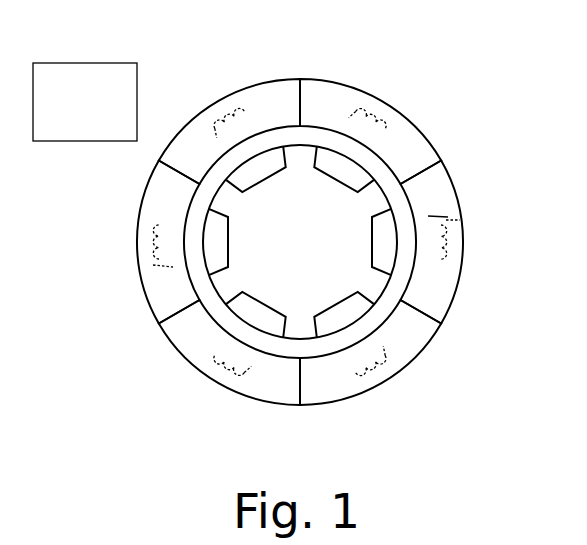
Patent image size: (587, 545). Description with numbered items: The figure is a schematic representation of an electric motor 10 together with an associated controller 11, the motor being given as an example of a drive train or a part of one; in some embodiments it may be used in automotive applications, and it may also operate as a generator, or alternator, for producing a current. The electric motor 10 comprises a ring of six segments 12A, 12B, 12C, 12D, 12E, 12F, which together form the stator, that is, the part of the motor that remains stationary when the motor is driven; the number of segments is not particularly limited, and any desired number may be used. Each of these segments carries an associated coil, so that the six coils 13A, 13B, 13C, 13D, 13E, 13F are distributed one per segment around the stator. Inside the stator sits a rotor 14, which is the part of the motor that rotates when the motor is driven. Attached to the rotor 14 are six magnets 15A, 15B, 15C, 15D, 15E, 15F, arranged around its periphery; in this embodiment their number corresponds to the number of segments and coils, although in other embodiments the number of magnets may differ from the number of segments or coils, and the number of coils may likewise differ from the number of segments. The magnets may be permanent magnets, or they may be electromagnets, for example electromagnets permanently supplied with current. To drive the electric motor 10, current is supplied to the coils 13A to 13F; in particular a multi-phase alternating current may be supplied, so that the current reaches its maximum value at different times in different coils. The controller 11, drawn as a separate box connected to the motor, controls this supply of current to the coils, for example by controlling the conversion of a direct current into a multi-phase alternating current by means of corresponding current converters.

The electric motor 10 is at (509, 233).
The controller 11 is at (67, 141).
The segment 12A is at (407, 118).
The segment 12B is at (449, 309).
The segment 12C is at (416, 357).
The segment 12D is at (189, 361).
The segment 12E is at (145, 293).
The segment 12F is at (244, 89).
The coil 13A is at (366, 112).
The coil 13B is at (448, 217).
The coil 13C is at (375, 370).
The coil 13D is at (233, 370).
The coil 13E is at (153, 253).
The coil 13F is at (218, 117).
The rotor 14 is at (387, 197).
The magnet 15A is at (313, 170).
The magnet 15B is at (368, 258).
The magnet 15C is at (352, 289).
The magnet 15D is at (255, 297).
The magnet 15E is at (229, 263).
The magnet 15F is at (243, 192).